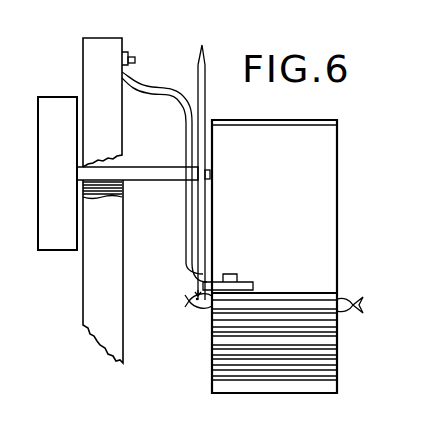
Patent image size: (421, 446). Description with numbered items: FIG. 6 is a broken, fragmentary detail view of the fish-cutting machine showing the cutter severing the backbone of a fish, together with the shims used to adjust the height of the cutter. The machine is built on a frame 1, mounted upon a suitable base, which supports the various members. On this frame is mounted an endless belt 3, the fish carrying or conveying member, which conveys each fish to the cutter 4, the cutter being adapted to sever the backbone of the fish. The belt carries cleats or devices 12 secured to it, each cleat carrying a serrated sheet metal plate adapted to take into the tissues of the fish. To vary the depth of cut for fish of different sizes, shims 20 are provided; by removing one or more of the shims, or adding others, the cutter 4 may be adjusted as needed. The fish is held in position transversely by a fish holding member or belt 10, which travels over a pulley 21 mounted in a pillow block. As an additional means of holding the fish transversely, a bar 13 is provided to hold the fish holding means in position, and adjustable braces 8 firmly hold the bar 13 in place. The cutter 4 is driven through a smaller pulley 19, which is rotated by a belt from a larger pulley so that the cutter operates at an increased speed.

The frame 1 is at (115, 295).
The endless belt 3 is at (338, 335).
The cutter 4 is at (203, 113).
The adjustable braces 8 is at (155, 85).
The fish holding member or belt 10 is at (335, 120).
The cleats 12 is at (222, 322).
The bar 13 is at (245, 285).
The pulley 19 is at (57, 173).
The shims 20 is at (120, 193).
The pulley 21 is at (332, 182).